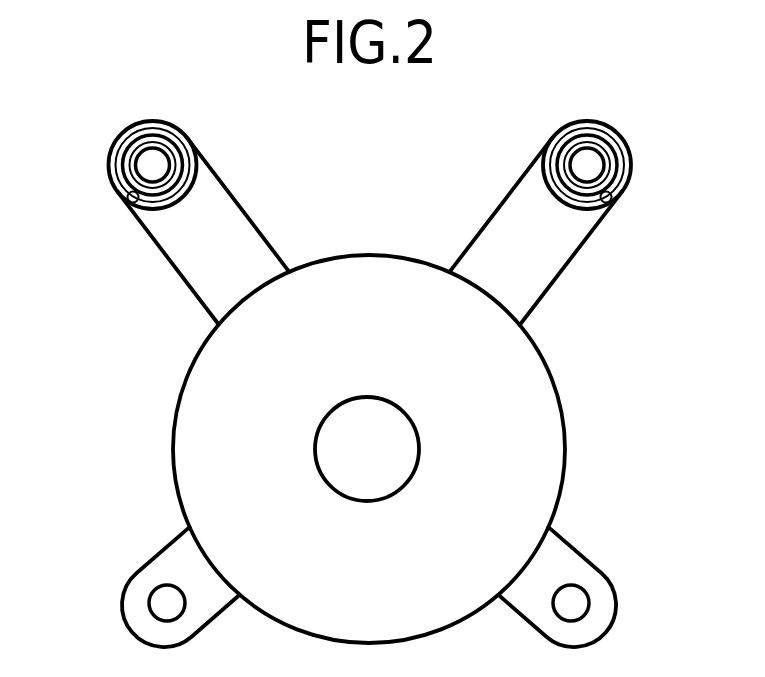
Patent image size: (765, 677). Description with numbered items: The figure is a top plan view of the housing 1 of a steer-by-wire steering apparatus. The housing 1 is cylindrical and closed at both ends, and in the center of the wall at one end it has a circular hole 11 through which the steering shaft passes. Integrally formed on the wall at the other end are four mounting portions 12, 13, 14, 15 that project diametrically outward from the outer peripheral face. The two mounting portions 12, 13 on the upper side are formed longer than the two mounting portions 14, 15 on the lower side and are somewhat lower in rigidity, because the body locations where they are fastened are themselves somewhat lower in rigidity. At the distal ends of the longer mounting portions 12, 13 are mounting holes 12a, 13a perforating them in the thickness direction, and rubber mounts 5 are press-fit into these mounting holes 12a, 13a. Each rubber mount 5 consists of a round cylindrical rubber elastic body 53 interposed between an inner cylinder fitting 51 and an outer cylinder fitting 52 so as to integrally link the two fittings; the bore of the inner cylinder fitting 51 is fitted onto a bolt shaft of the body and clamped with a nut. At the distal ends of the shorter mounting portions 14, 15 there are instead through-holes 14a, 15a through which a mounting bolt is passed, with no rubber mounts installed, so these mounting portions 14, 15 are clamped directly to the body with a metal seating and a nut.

The housing 1 is at (167, 433).
The circular hole 11 is at (397, 481).
The mounting portion 12 is at (192, 268).
The mounting hole 12a is at (126, 204).
The mounting portion 13 is at (547, 267).
The mounting hole 13a is at (613, 199).
The mounting portion 14 is at (563, 552).
The through-hole 14a is at (582, 586).
The mounting portion 15 is at (172, 558).
The through-hole 15a is at (155, 588).
The rubber mount 5 is at (112, 162).
The inner cylinder fitting 51 is at (185, 145).
The outer cylinder fitting 52 is at (177, 157).
The rubber elastic body 53 is at (182, 180).